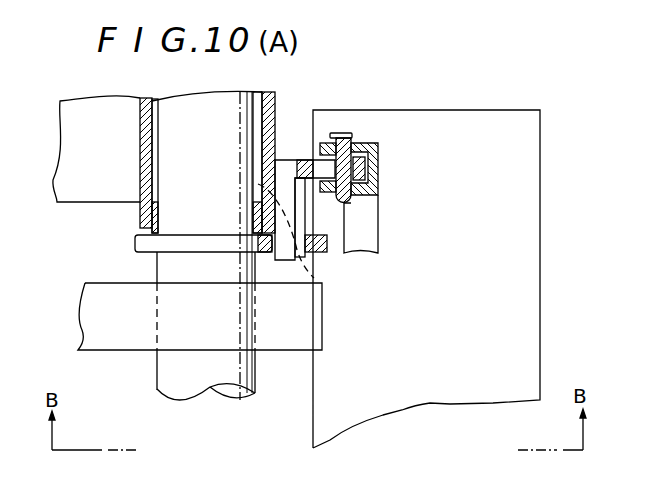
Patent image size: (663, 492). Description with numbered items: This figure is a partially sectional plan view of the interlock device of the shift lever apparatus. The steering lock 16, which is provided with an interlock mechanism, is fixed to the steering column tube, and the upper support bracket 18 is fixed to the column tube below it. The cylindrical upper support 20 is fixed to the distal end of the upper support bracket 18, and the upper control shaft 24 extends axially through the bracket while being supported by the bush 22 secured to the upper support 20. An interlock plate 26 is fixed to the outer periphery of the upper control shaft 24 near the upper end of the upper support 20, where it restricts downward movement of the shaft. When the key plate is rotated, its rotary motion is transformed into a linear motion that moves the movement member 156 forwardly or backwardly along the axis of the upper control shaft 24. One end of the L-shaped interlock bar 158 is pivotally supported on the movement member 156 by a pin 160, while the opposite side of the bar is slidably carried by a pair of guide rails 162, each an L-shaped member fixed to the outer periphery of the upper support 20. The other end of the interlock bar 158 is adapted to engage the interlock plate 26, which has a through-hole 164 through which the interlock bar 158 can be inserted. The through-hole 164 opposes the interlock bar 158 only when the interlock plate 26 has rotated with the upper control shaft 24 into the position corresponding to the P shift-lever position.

The steering lock 16 is at (483, 97).
The upper support bracket 18 is at (73, 145).
The upper support 20 is at (140, 212).
The bush 22 is at (158, 218).
The upper control shaft 24 is at (188, 390).
The interlock plate 26 is at (137, 253).
The movement member 156 is at (378, 229).
The interlock bar 158 is at (285, 158).
The pin 160 is at (344, 134).
The guide rails 162 is at (315, 278).
The through-hole 164 is at (293, 258).